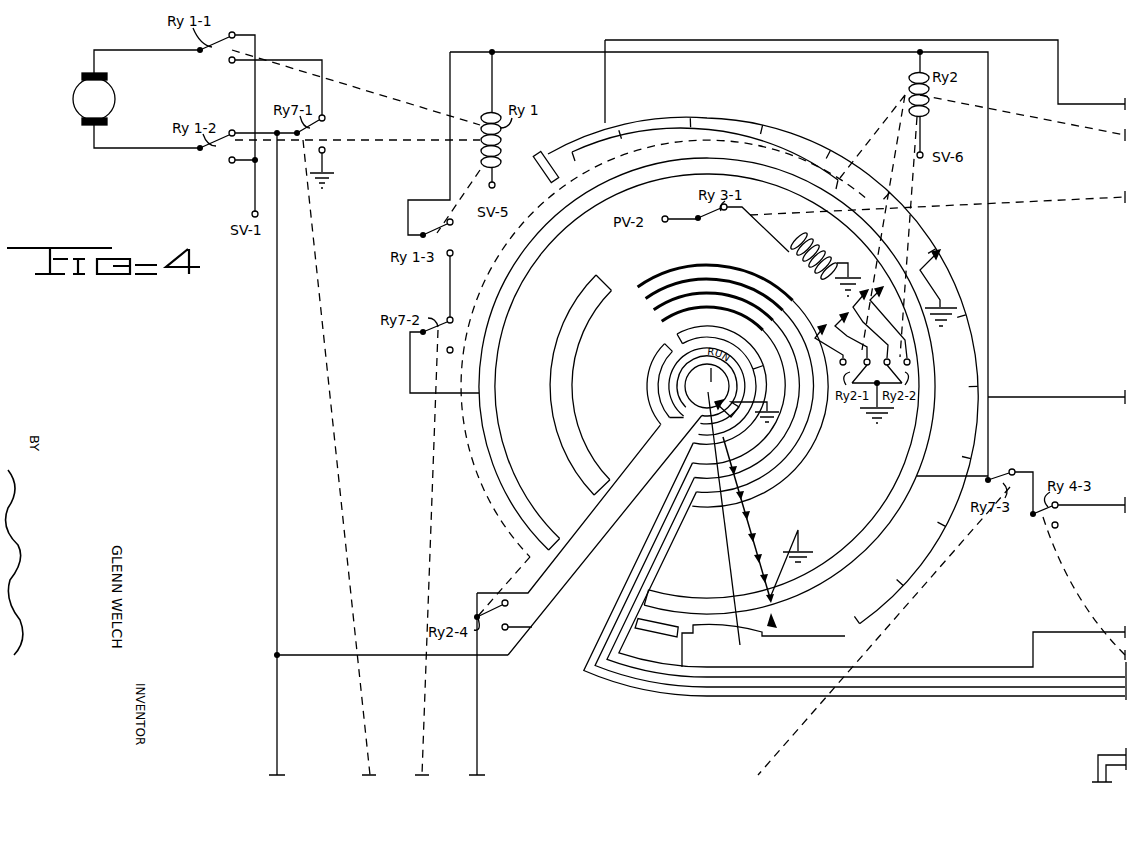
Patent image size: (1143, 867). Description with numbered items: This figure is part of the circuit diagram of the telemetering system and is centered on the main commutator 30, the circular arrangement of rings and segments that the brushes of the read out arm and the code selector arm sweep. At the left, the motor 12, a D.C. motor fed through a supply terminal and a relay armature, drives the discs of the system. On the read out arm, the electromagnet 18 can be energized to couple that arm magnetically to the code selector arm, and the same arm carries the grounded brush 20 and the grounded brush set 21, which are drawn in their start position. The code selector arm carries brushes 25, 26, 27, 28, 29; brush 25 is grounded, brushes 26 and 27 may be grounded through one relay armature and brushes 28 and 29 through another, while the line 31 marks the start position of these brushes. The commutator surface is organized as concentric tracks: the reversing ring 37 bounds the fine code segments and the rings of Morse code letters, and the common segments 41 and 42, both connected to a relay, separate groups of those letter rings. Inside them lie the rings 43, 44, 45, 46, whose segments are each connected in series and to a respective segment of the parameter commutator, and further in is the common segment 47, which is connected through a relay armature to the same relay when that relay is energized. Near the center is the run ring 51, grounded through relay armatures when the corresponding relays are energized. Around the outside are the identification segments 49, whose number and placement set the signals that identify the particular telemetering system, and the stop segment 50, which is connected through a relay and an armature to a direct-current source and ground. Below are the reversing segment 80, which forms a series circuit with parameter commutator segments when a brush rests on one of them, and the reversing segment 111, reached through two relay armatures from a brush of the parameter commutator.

The motor 12 is at (72, 92).
The electromagnet 18 is at (814, 252).
The brush 20 is at (715, 402).
The brush set 21 is at (781, 612).
The brush 25 is at (934, 285).
The brush 26 is at (888, 322).
The brush 27 is at (870, 321).
The brush 28 is at (850, 326).
The brush 29 is at (827, 331).
The main commutator 30 is at (463, 522).
The line 31 is at (723, 565).
The reversing ring 37 is at (498, 357).
The common segment 41 is at (558, 444).
The common segment 42 is at (655, 366).
The ring 43 is at (663, 327).
The ring 44 is at (656, 316).
The ring 45 is at (648, 303).
The ring 46 is at (640, 290).
The common segment 47 is at (745, 347).
The identification segments 49 is at (713, 119).
The stop segment 50 is at (543, 172).
The run ring 51 is at (702, 376).
The reversing segment 80 is at (713, 637).
The reversing segment 111 is at (656, 634).